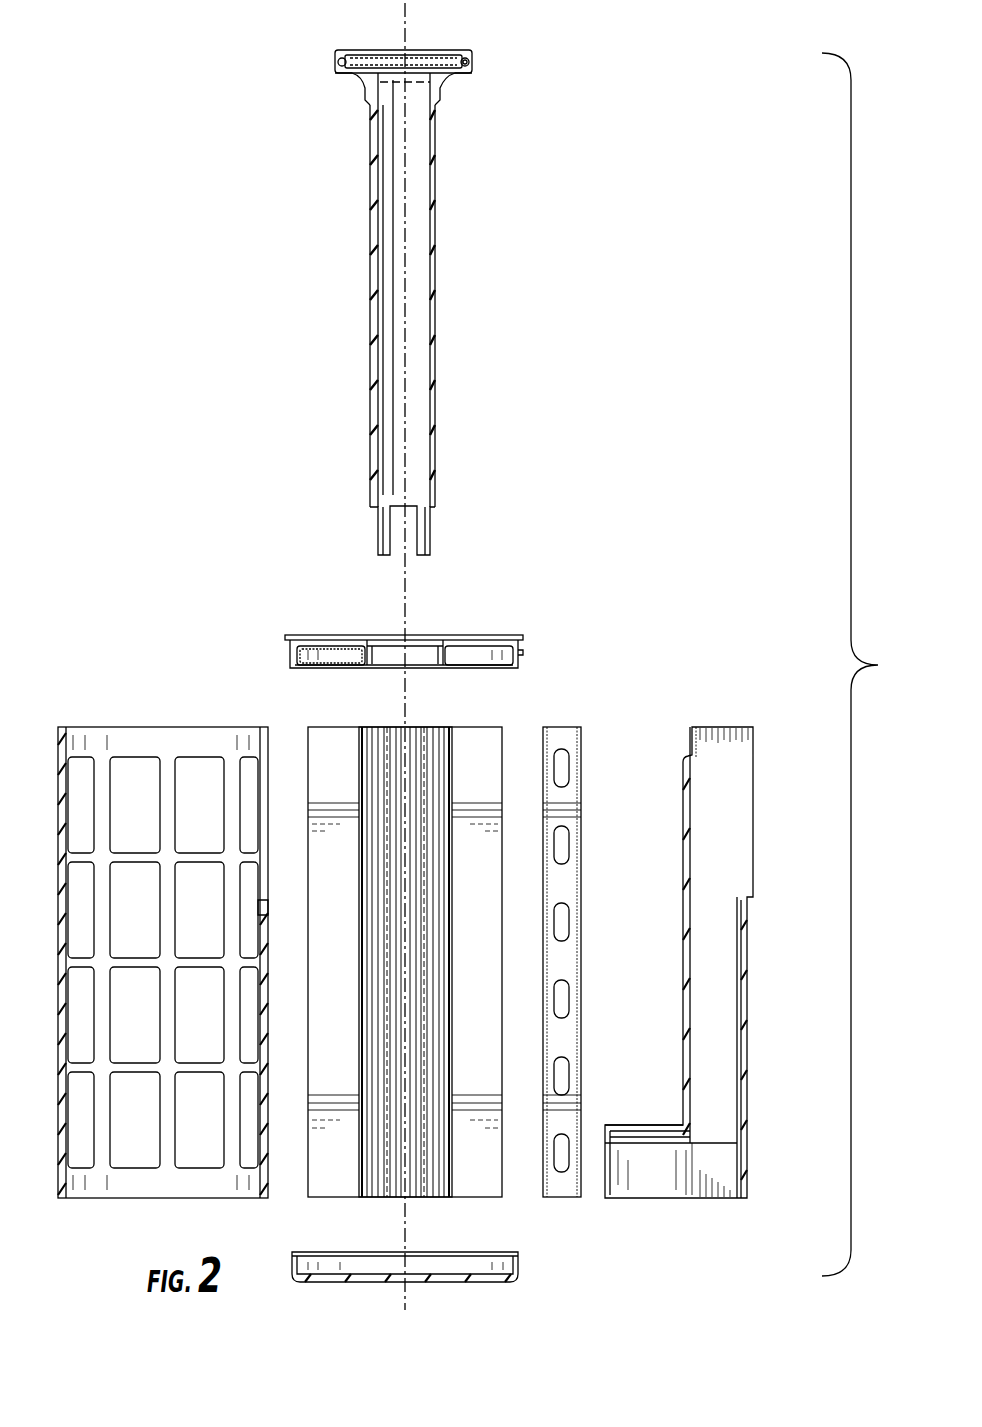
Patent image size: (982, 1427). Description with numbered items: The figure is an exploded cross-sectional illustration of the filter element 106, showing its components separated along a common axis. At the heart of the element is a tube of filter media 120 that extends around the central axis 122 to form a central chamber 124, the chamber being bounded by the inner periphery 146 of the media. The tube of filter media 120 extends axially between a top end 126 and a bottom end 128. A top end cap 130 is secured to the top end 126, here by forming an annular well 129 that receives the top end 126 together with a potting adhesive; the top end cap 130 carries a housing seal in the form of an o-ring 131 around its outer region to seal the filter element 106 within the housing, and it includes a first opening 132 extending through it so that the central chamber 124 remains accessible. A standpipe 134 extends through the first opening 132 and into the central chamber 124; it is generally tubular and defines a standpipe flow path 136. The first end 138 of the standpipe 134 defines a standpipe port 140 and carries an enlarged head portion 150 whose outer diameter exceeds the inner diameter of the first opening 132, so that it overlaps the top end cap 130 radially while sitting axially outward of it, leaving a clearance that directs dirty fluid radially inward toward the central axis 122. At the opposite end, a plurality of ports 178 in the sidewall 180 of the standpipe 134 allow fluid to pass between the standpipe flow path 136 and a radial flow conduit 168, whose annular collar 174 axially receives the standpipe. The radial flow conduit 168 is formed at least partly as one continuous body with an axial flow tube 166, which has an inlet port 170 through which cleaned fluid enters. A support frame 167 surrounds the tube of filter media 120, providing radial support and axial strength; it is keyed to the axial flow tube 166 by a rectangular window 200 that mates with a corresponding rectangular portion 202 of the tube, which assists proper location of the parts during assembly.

The filter element 106 is at (871, 664).
The tube of filter media 120 is at (422, 760).
The central axis 122 is at (406, 200).
The central chamber 124 is at (422, 804).
The top end 126 is at (491, 727).
The bottom end 128 is at (475, 1199).
The annular well 129 is at (320, 661).
The top end cap 130 is at (318, 645).
The o-ring 131 is at (519, 655).
The first opening 132 is at (388, 630).
The standpipe 134 is at (372, 200).
The standpipe flow path 136 is at (386, 266).
The first end 138 is at (480, 52).
The standpipe port 140 is at (366, 46).
The inner periphery 146 is at (374, 745).
The enlarged head portion 150 is at (473, 68).
The axial flow tube 166 is at (715, 800).
The support frame 167 is at (126, 737).
The radial flow conduit 168 is at (660, 1175).
The inlet port 170 is at (765, 833).
The annular collar 174 is at (606, 1157).
The ports 178 is at (416, 567).
The sidewall 180 is at (436, 470).
The rectangular window 200 is at (281, 884).
The rectangular portion 202 is at (745, 904).